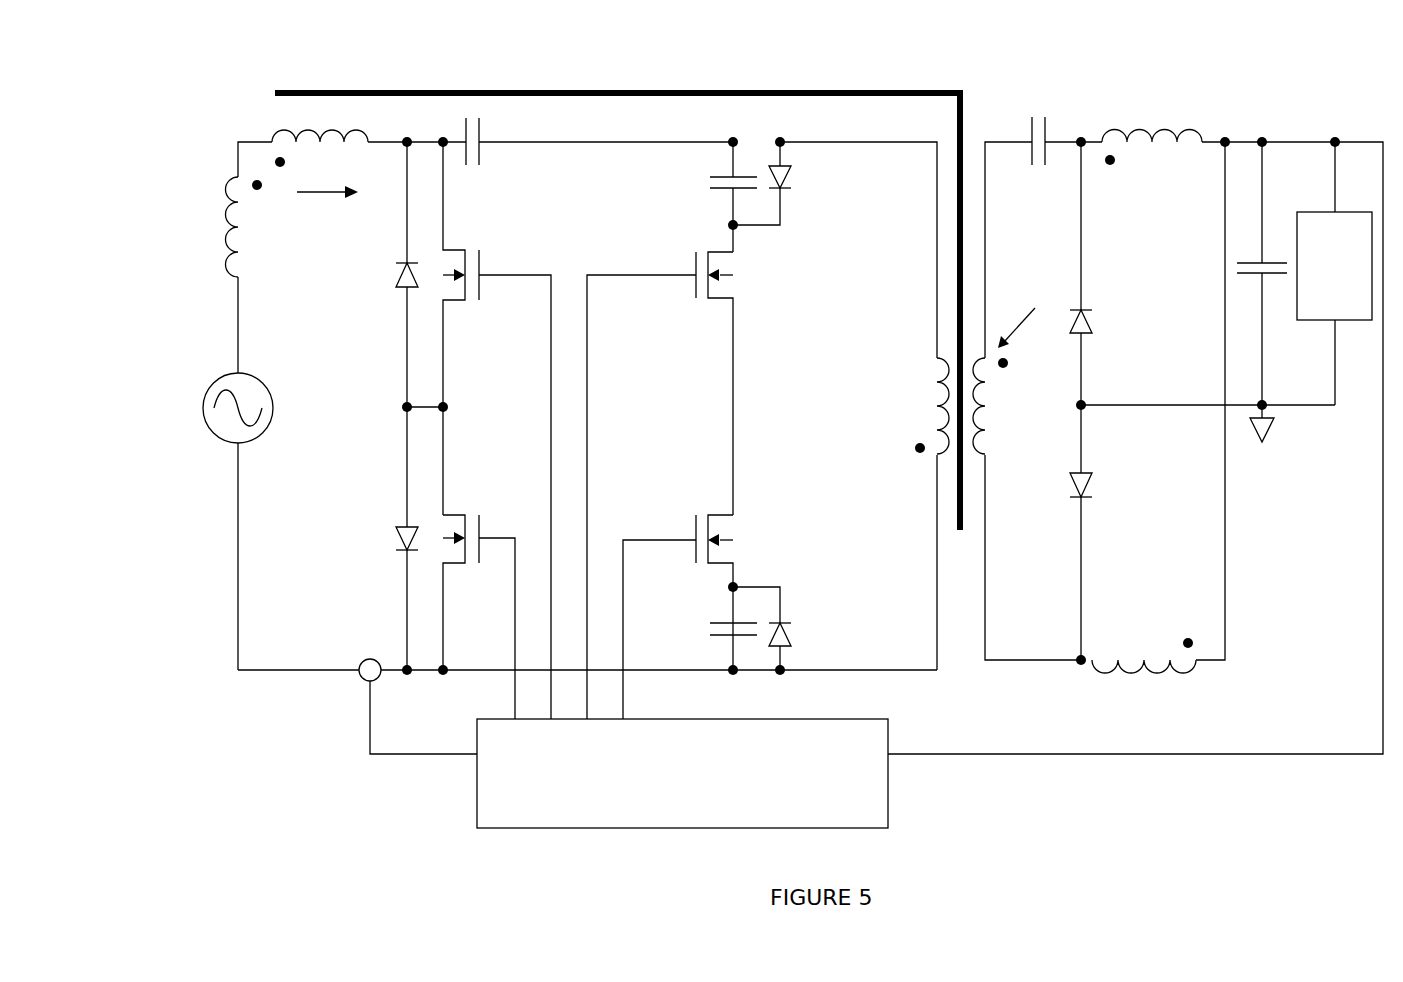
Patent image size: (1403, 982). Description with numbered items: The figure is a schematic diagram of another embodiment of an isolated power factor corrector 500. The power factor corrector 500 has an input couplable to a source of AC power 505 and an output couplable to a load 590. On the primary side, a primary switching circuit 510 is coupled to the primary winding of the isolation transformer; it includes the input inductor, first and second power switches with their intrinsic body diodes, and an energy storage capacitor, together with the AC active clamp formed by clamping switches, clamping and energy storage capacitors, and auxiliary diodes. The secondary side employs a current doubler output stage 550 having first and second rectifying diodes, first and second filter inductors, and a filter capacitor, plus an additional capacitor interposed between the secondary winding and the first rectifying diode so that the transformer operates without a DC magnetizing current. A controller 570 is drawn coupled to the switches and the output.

The isolated power factor corrector 500 is at (208, 43).
The source of AC power 505 is at (248, 394).
The primary switching circuit 510 is at (490, 82).
The current doubler output stage 550 is at (1285, 90).
The controller 570 is at (682, 773).
The load 590 is at (1334, 273).